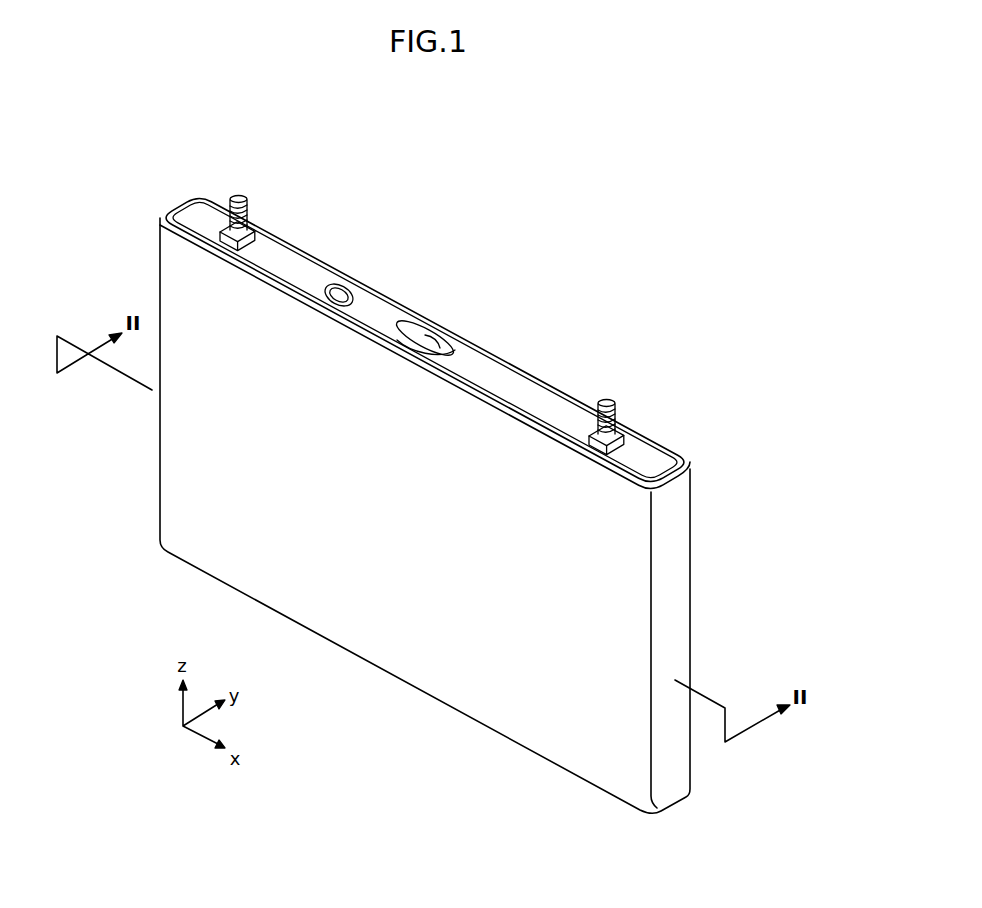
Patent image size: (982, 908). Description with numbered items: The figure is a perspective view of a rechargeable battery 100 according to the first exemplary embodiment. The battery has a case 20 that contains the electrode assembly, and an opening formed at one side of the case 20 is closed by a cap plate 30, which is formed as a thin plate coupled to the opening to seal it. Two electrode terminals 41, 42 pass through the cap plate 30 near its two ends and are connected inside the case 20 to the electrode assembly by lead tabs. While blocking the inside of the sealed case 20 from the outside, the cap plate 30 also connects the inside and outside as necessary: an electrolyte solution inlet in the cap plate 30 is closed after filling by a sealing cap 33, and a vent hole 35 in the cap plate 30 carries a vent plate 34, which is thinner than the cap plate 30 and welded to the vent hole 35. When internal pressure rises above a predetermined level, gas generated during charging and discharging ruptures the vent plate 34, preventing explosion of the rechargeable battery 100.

The rechargeable battery 100 is at (537, 259).
The case 20 is at (405, 663).
The cap plate 30 is at (522, 390).
The sealing cap 33 is at (337, 287).
The vent plate 34 is at (418, 333).
The vent hole 35 is at (443, 346).
The electrode terminal 41 is at (247, 192).
The electrode terminal 42 is at (615, 400).